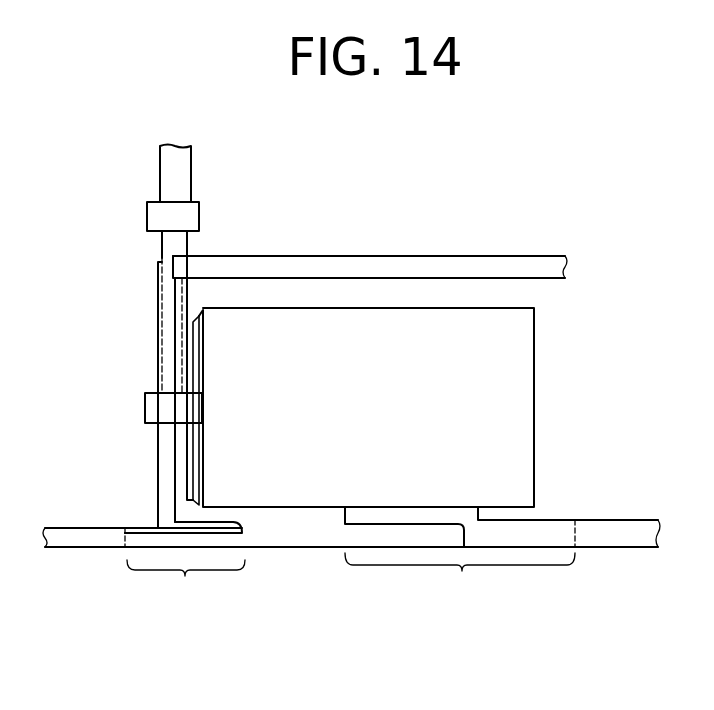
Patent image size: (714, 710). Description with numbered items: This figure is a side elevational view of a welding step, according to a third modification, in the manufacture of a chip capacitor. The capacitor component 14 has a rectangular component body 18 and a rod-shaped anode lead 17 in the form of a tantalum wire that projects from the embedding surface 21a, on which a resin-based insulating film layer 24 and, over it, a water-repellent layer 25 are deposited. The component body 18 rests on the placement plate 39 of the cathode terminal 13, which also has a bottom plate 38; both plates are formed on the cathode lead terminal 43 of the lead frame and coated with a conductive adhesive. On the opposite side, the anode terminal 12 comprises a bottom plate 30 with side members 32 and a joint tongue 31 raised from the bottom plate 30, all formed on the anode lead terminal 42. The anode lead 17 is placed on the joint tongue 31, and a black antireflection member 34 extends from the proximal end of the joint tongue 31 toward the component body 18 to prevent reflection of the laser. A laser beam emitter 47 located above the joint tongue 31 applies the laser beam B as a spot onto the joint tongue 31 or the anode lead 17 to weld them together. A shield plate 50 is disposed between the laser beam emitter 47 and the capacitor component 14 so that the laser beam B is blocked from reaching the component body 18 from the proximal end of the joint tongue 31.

The laser beam emitter 47 is at (192, 173).
The laser beam B is at (158, 258).
The shield plate 50 is at (432, 253).
The capacitor component 14 is at (449, 303).
The joint tongue 31 is at (157, 460).
The water-repellent layer 25 is at (175, 333).
The resin-based insulating film layer 24 is at (192, 343).
The embedding surface 21a is at (190, 371).
The anode lead 17 is at (145, 408).
The component body 18 is at (365, 305).
The antireflection member 34 is at (222, 522).
The bottom plate 30 is at (237, 530).
The side members 32 is at (147, 537).
The anode lead terminal 42 is at (88, 560).
The anode terminal 12 is at (186, 585).
The placement plate 39 is at (410, 503).
The bottom plate 38 is at (550, 520).
The cathode lead terminal 43 is at (611, 552).
The cathode terminal 13 is at (460, 580).